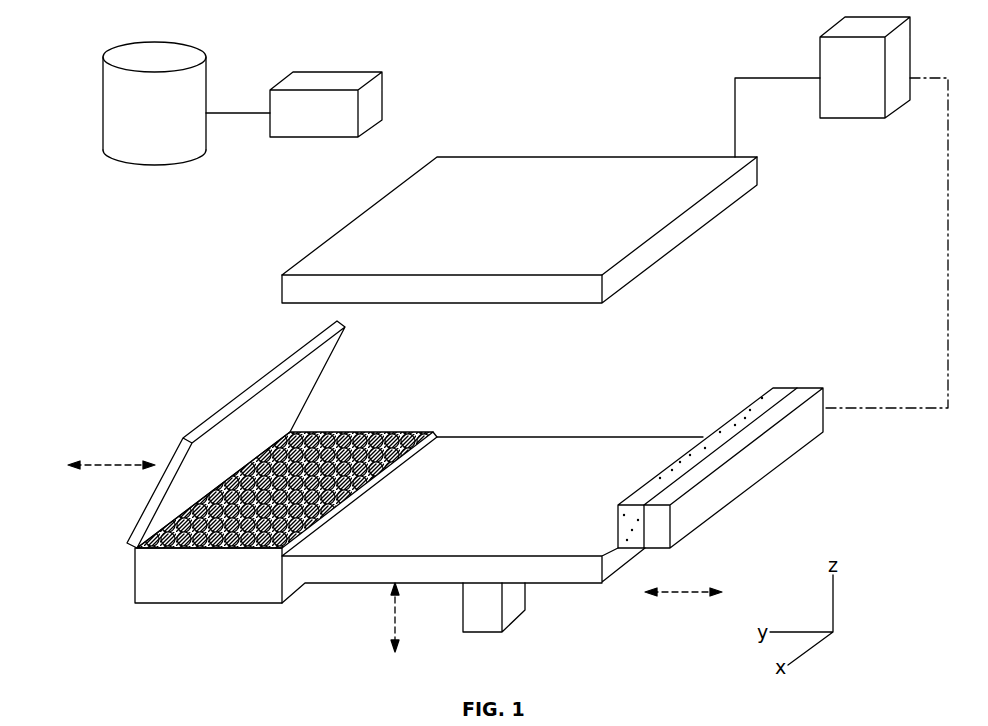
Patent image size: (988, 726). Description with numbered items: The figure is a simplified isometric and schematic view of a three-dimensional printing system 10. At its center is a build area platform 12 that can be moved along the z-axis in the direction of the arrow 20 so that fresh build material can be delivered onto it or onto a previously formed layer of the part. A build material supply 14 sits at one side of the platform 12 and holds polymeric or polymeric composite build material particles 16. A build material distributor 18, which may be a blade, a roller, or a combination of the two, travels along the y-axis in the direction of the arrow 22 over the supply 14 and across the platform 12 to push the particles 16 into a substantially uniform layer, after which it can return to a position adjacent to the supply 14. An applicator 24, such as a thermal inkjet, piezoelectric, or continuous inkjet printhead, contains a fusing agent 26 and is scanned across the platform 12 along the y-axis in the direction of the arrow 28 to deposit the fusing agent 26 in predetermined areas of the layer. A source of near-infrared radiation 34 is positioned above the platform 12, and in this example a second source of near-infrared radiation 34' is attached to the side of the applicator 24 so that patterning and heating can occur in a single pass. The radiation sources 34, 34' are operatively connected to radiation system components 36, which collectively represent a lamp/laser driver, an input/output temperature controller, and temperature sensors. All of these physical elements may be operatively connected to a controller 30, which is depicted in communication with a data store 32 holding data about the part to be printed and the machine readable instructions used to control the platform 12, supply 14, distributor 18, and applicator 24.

The printing system 10 is at (84, 103).
The build area platform 12 is at (568, 583).
The build material supply 14 is at (205, 603).
The polymeric or polymeric composite build material particles 16 is at (152, 552).
The build material distributor 18 is at (230, 400).
The arrow 20 is at (393, 610).
The arrow 22 is at (102, 465).
The applicator 24 is at (777, 388).
The fusing agent 26 is at (730, 428).
The arrow 28 is at (683, 595).
The controller 30 is at (207, 72).
The data store 32 is at (332, 72).
The source of near-infrared radiation 34 is at (519, 190).
The source of near-infrared radiation 34' is at (817, 349).
The radiation system components 36 is at (850, 92).